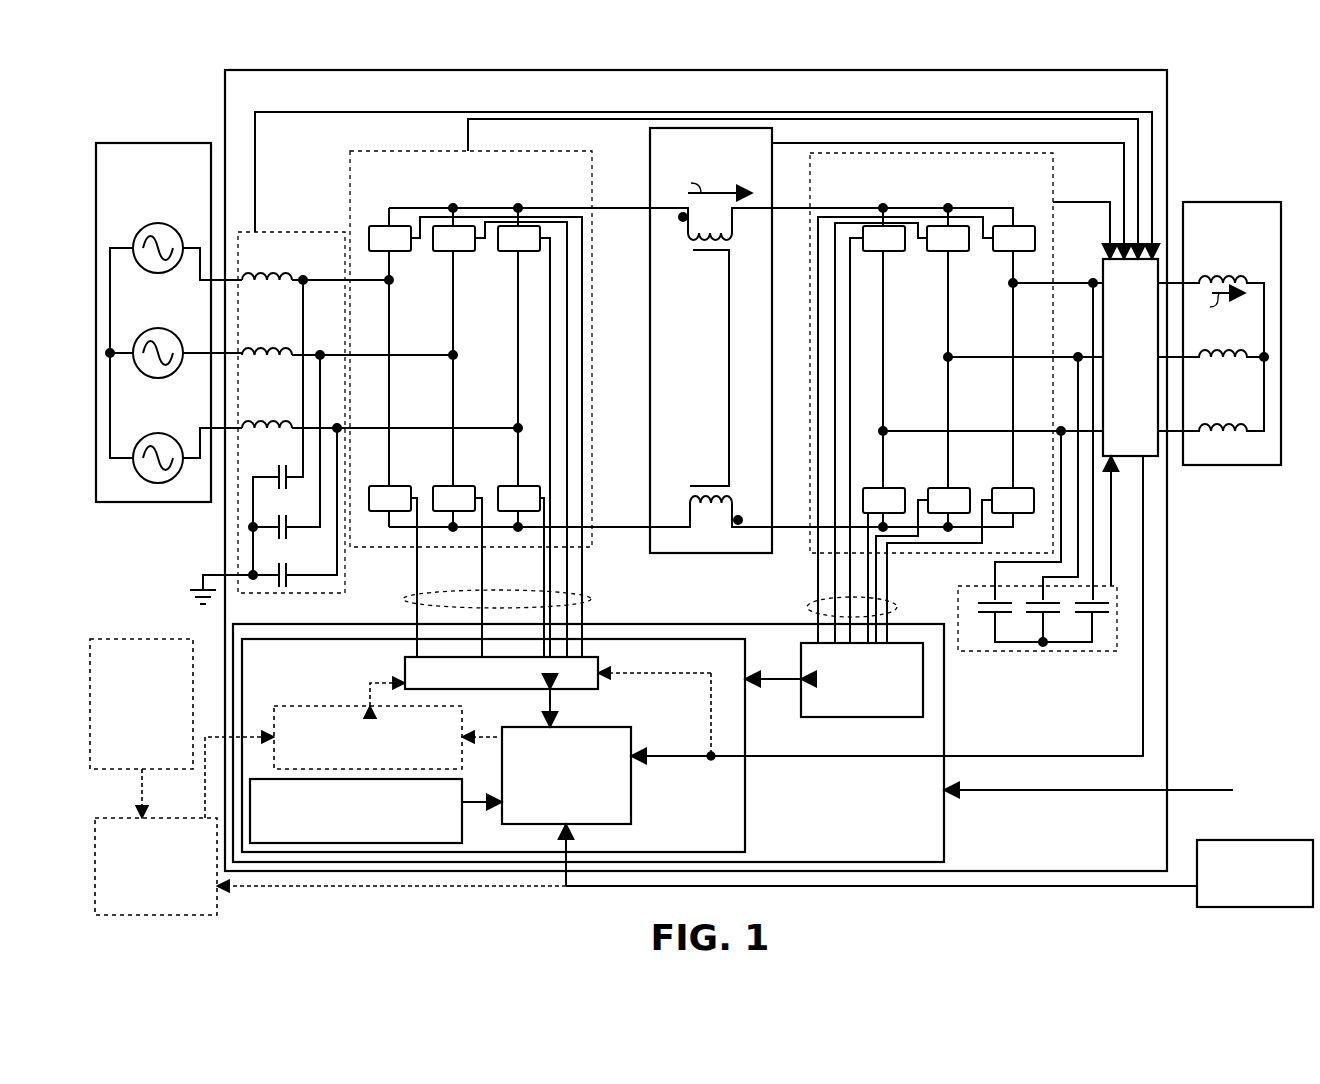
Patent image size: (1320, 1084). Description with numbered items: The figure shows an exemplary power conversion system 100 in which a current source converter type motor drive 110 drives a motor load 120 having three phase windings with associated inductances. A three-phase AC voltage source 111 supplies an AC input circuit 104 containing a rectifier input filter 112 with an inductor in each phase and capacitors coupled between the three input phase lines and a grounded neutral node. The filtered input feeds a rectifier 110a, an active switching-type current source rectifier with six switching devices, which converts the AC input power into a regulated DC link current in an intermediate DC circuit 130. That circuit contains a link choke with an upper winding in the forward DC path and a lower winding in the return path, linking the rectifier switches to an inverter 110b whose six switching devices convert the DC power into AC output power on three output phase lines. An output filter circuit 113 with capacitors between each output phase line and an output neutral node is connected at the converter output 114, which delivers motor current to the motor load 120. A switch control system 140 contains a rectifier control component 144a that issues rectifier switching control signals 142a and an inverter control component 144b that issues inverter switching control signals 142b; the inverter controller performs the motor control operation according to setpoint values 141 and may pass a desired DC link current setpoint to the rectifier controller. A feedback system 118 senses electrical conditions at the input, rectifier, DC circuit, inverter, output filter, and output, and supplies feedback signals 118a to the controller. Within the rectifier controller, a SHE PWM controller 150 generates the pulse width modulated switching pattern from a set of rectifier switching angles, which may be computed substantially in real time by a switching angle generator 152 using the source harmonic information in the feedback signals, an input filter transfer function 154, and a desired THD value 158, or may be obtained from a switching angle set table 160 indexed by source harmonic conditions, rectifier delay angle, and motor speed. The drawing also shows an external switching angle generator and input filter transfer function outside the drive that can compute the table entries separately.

The power conversion system 100 is at (160, 98).
The AC input circuit 104 is at (218, 142).
The current source converter motor drive 110 is at (225, 90).
The rectifier 110a is at (359, 151).
The inverter 110b is at (1053, 175).
The AC voltage source 111 is at (147, 143).
The input filter 112 is at (276, 232).
The output filter circuit 113 is at (975, 586).
The converter output 114 is at (1175, 478).
The feedback system 118 is at (1103, 263).
The feedback signals 118a is at (1013, 756).
The motor load 120 is at (1229, 202).
The intermediate DC circuit 130 is at (650, 148).
The switch control system 140 is at (944, 834).
The setpoint values 141 is at (1180, 792).
The rectifier switching control signals 142a is at (406, 601).
The inverter switching control signals 142b is at (808, 607).
The rectifier control component 144a is at (745, 820).
The inverter control component 144b is at (801, 660).
The PWM controller 150 is at (405, 662).
The switching angle generator 152 is at (519, 727).
The input filter transfer function 154 is at (462, 838).
The desired THD value 158 is at (1254, 840).
The switching angle set table 160 is at (339, 705).